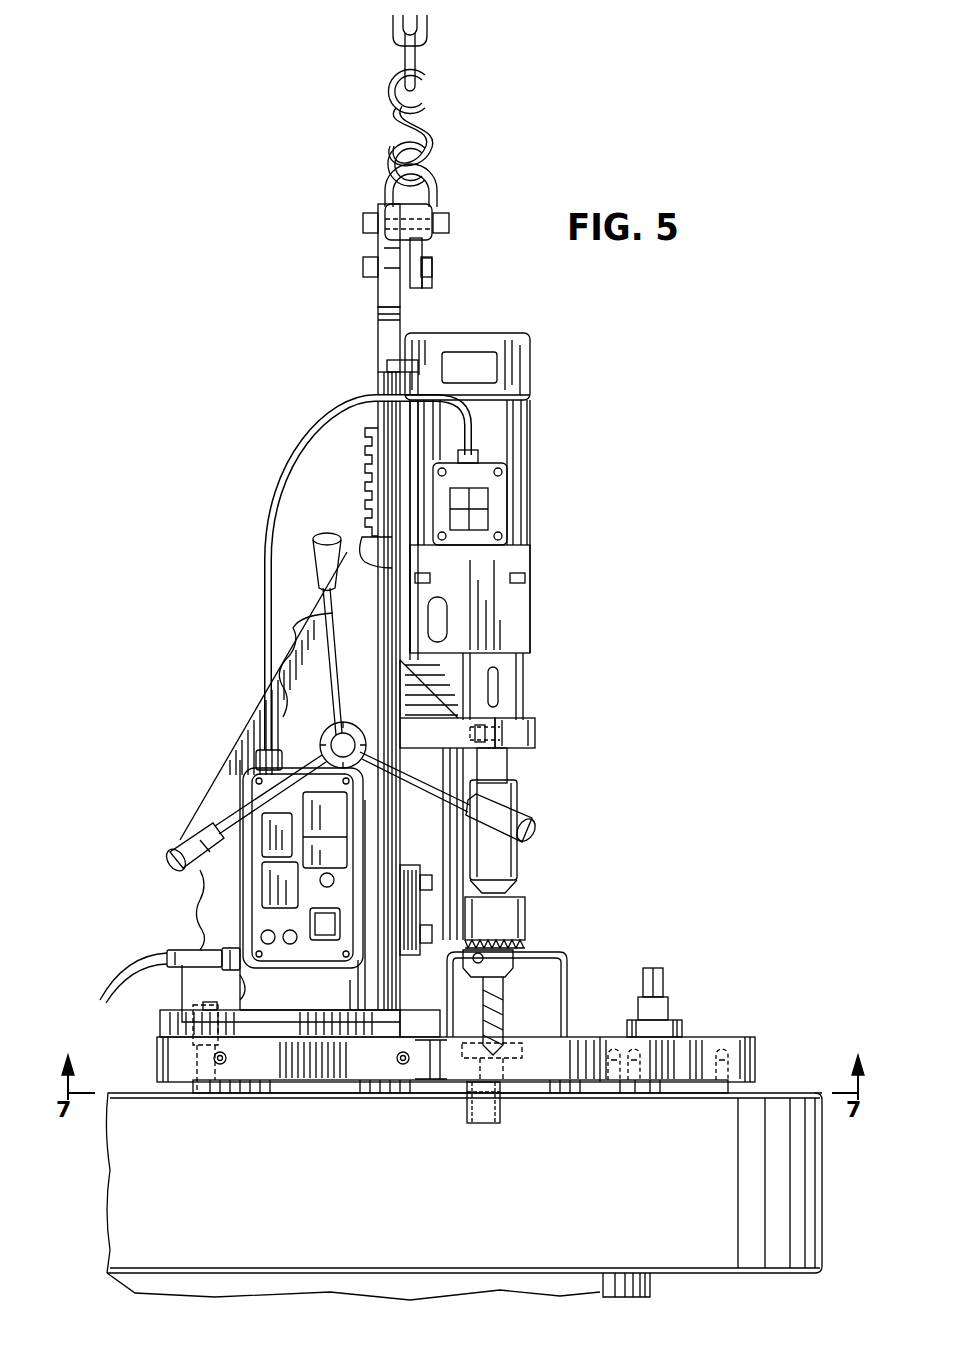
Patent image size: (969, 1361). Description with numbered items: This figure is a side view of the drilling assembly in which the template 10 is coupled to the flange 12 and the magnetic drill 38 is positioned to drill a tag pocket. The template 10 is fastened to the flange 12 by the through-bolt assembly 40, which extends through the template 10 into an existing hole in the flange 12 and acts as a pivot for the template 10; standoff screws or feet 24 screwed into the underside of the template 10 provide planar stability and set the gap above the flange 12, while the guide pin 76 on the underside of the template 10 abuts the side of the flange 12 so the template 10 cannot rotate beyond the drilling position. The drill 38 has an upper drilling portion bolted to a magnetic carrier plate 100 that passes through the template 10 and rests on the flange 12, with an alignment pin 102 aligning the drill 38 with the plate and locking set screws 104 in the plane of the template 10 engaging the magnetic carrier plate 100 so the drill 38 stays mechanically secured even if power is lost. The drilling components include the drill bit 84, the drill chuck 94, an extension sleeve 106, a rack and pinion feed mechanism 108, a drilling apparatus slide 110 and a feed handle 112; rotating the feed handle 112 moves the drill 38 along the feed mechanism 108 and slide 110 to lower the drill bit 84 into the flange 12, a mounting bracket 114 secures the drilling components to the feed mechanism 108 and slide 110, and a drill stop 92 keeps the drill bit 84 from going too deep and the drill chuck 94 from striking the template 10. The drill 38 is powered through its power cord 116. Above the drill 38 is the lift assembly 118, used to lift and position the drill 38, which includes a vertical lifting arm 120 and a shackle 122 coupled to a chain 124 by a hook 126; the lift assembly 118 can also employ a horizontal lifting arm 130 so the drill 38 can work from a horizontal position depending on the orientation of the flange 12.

The hook 126 is at (393, 30).
The chain 124 is at (428, 113).
The shackle 122 is at (438, 187).
The vertical lifting arm 120 is at (415, 248).
The lift assembly 118 is at (385, 324).
The rack and pinion feed mechanism 108 is at (372, 442).
The drilling apparatus slide 110 is at (385, 567).
The drill 38 is at (220, 766).
The feed handle 112 is at (178, 842).
The extension sleeve 106 is at (517, 810).
The mounting bracket 114 is at (537, 736).
The horizontal lifting arm 130 is at (415, 905).
The drill stop 92 is at (462, 916).
The drill chuck 94 is at (520, 924).
The drill bit 84 is at (495, 1000).
The magnetic carrier plate 100 is at (290, 1085).
The template 10 is at (722, 1040).
The standoff screws or feet 24 is at (715, 1083).
The through-bolt assembly 40 is at (665, 990).
The guide pin 76 is at (462, 1104).
The locking set screws 104 is at (220, 1064).
The alignment pin 102 is at (200, 1008).
The power cord 116 is at (170, 956).
The flange 12 is at (706, 1262).